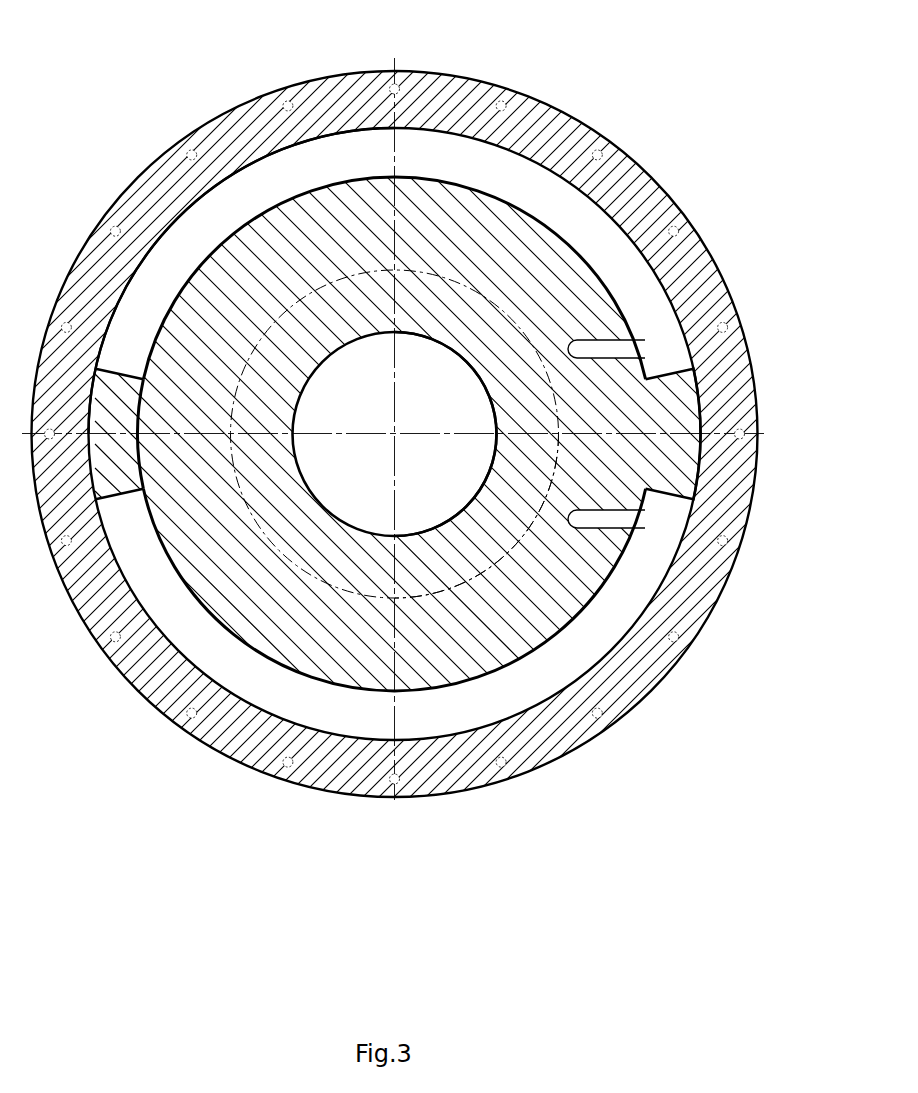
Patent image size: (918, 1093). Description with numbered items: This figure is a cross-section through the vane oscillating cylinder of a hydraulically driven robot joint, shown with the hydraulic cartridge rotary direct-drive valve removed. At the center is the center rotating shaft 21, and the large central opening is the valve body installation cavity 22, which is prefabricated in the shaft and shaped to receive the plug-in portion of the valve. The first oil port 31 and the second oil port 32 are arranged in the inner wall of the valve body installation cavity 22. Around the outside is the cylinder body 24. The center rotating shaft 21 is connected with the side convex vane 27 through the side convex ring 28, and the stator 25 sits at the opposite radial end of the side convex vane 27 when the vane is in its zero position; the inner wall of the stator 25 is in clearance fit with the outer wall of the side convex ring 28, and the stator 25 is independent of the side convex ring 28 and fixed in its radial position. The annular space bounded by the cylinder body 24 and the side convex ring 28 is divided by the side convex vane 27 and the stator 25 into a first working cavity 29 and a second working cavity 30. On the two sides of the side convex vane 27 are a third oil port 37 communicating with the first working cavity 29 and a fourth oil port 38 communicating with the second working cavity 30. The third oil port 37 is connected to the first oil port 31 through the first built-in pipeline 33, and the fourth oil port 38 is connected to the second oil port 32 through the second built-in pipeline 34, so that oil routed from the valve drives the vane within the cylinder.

The center rotating shaft 21 is at (378, 568).
The valve body installation cavity 22 is at (363, 393).
The cylinder body 24 is at (160, 632).
The stator 25 is at (108, 405).
The side convex vane 27 is at (680, 408).
The side convex ring 28 is at (240, 600).
The first working cavity 29 is at (183, 247).
The second working cavity 30 is at (290, 690).
The first oil port 31 is at (490, 377).
The second oil port 32 is at (486, 483).
The first built-in pipeline 33 is at (522, 368).
The second built-in pipeline 34 is at (528, 505).
The third oil port 37 is at (602, 343).
The fourth oil port 38 is at (603, 517).